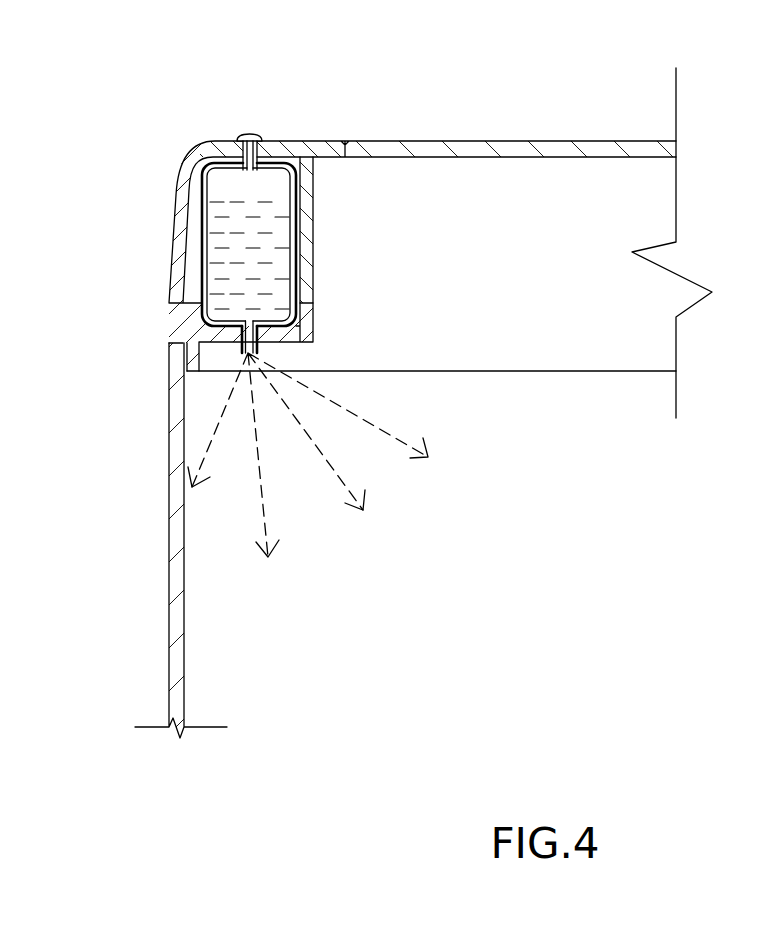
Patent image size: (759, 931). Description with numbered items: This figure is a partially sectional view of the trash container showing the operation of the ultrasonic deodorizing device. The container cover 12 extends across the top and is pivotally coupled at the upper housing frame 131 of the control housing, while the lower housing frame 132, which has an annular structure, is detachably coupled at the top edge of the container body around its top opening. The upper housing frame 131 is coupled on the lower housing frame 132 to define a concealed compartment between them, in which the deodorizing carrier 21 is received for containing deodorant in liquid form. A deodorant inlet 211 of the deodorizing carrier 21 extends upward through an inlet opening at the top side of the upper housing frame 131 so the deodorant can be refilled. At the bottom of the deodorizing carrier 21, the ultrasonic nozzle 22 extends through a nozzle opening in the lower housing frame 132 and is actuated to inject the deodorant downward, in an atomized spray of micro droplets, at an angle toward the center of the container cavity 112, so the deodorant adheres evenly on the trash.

The container cover 12 is at (405, 152).
The deodorizing carrier 21 is at (215, 208).
The deodorant inlet 211 is at (243, 157).
The ultrasonic nozzle 22 is at (245, 352).
The upper housing frame 131 is at (177, 270).
The lower housing frame 132 is at (175, 315).
The container cavity 112 is at (578, 578).